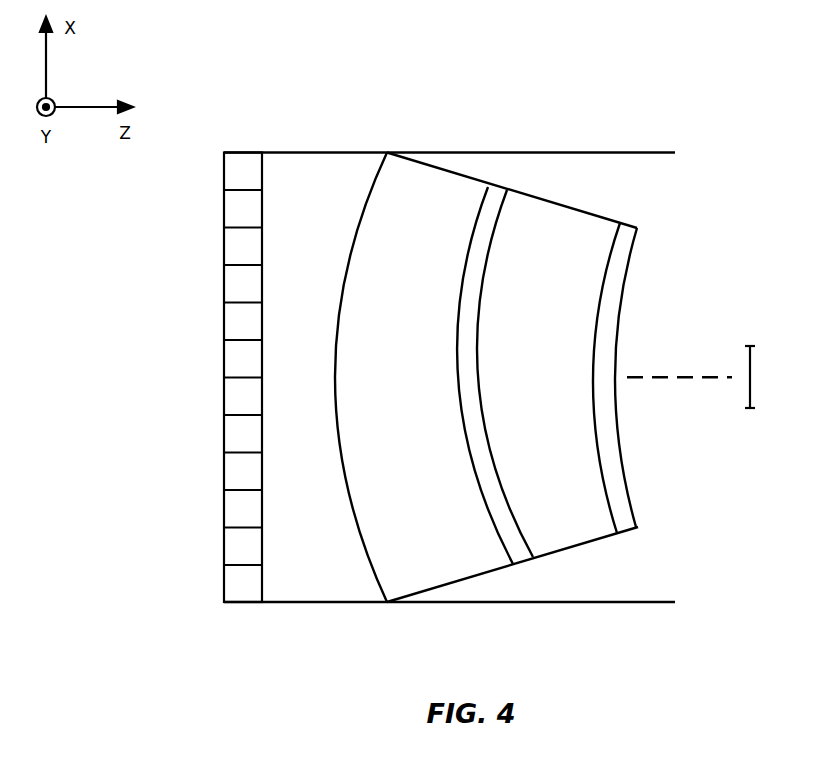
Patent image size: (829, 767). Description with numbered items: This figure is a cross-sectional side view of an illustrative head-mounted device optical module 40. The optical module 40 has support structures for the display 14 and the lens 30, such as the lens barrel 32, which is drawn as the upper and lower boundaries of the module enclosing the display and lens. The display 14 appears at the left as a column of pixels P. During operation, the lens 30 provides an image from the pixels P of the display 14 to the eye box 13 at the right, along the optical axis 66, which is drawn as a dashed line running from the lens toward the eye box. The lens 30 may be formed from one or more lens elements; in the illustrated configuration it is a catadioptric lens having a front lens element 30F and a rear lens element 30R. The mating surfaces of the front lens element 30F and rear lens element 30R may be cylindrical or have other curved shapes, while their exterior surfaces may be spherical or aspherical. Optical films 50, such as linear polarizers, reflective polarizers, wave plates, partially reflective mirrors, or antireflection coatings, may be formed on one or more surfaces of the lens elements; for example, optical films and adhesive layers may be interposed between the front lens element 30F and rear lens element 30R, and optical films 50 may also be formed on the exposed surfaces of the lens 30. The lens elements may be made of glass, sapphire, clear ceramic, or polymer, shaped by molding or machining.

The display 14 is at (224, 200).
The pixels P is at (248, 358).
The lens 30 is at (581, 557).
The front lens element 30F is at (433, 189).
The optical films 50 is at (497, 185).
The rear lens element 30R is at (563, 222).
The lens barrel 32 is at (445, 605).
The optical axis 66 is at (680, 377).
The eye box 13 is at (751, 410).
The optical module 40 is at (742, 576).